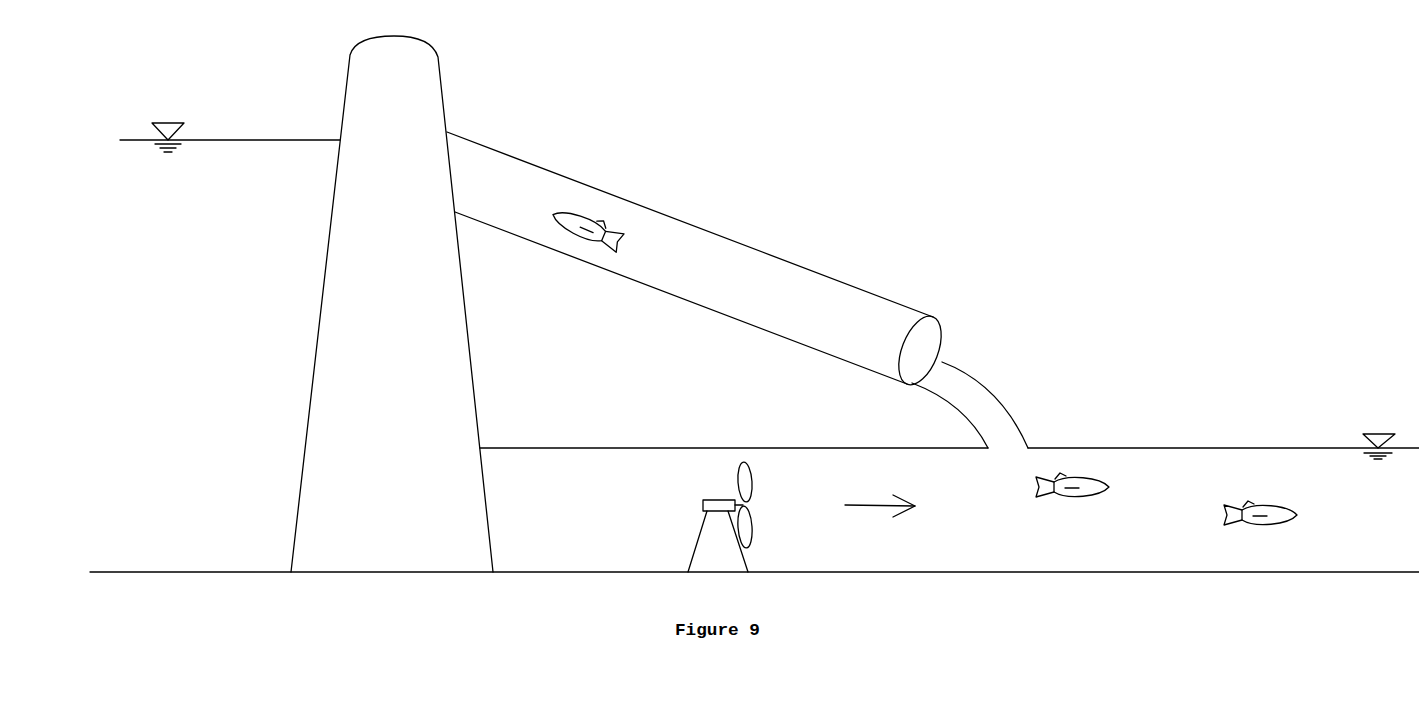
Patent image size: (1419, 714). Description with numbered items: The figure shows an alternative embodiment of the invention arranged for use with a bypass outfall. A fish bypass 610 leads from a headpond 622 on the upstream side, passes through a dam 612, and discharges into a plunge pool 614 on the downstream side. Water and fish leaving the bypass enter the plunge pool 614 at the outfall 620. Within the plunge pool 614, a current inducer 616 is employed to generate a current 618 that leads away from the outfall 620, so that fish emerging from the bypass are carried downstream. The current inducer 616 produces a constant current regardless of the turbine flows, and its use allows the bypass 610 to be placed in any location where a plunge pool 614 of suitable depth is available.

The fish bypass 610 is at (695, 257).
The dam 612 is at (410, 88).
The plunge pool 614 is at (1170, 473).
The current inducer 616 is at (758, 527).
The current 618 is at (910, 522).
The outfall 620 is at (998, 422).
The headpond 622 is at (212, 162).